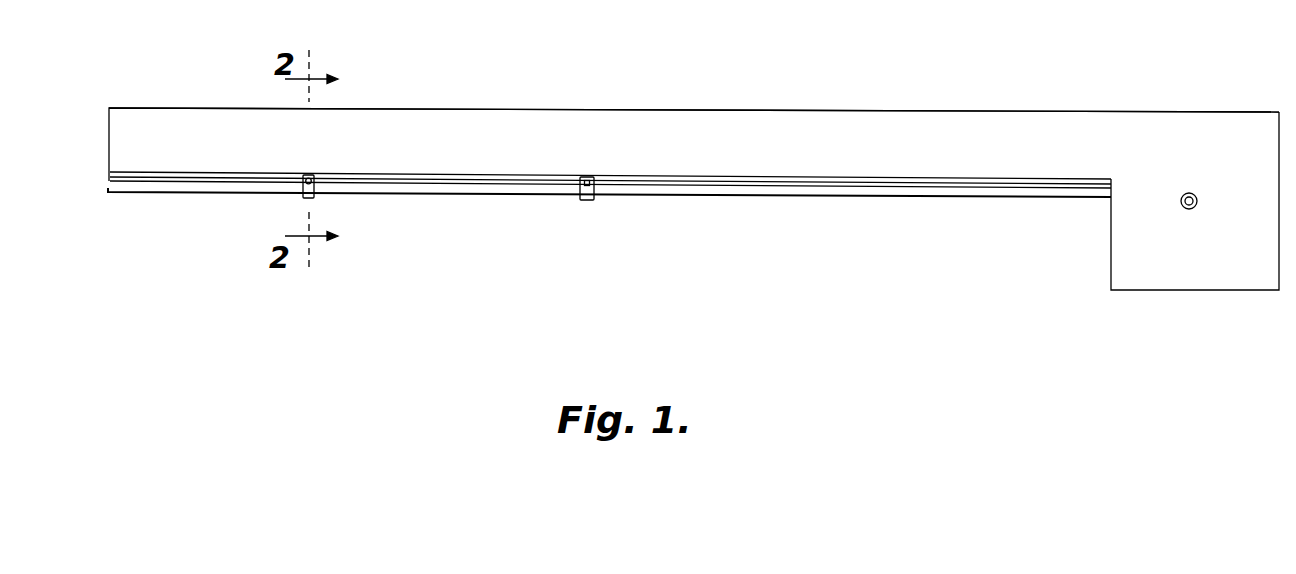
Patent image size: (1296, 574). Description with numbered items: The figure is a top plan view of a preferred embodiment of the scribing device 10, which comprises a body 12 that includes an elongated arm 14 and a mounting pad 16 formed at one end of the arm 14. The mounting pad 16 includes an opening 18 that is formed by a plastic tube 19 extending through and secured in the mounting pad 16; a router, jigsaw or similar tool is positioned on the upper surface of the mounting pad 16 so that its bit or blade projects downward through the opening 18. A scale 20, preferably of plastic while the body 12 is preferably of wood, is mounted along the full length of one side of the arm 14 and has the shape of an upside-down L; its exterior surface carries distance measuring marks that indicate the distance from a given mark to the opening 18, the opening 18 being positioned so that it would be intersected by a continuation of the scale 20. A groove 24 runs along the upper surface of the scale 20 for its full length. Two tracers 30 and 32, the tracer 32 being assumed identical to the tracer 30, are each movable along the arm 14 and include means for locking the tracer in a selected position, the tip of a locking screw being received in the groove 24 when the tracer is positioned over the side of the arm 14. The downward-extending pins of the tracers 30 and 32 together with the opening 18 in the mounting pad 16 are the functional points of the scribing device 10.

The scribing device 10 is at (935, 277).
The body 12 is at (720, 104).
The arm 14 is at (447, 118).
The mounting pad 16 is at (1132, 258).
The opening 18 is at (1193, 194).
The plastic tube 19 is at (1190, 210).
The scale 20 is at (968, 192).
The groove 24 is at (722, 182).
The tracer 30 is at (304, 197).
The tracer 32 is at (588, 201).